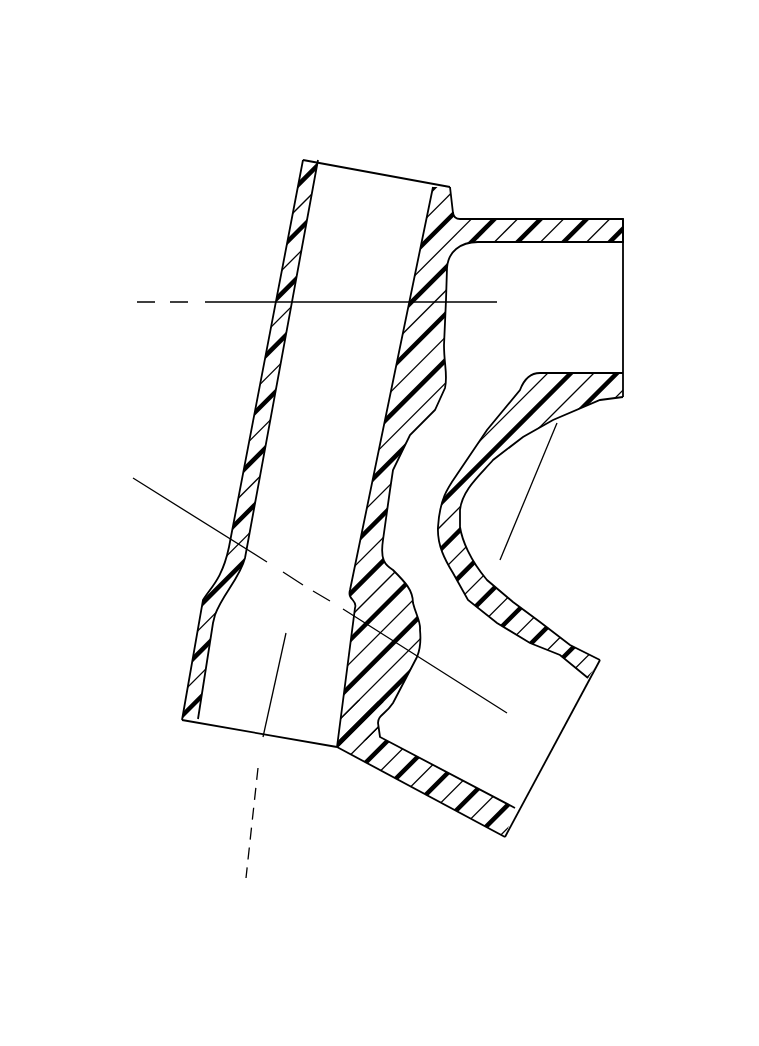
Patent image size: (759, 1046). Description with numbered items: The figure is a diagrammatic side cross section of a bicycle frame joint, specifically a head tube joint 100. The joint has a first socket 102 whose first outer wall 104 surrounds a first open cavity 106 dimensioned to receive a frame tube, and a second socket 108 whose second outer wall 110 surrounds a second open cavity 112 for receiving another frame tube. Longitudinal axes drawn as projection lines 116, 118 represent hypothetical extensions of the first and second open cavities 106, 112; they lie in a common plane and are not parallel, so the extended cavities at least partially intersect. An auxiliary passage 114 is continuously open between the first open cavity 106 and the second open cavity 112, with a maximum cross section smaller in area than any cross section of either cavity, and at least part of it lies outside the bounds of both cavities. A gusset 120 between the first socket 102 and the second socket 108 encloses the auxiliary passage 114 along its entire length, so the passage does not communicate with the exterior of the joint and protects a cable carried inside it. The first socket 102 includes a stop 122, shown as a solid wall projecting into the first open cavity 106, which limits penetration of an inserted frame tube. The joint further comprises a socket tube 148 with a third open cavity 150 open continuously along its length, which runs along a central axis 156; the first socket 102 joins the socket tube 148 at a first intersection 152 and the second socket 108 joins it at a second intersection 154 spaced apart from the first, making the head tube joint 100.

The head tube joint 100 is at (579, 108).
The first socket 102 is at (655, 316).
The first outer wall 104 is at (584, 219).
The first open cavity 106 is at (586, 341).
The second socket 108 is at (630, 784).
The second outer wall 110 is at (580, 637).
The second open cavity 112 is at (506, 744).
The auxiliary passage 114 is at (457, 463).
The projection line 116 is at (150, 302).
The projection line 118 is at (170, 500).
The gusset 120 is at (503, 487).
The stop 122 is at (455, 268).
The socket tube 148 is at (299, 190).
The third open cavity 150 is at (368, 163).
The first intersection 152 is at (400, 260).
The second intersection 154 is at (322, 644).
The central axis 156 is at (240, 858).